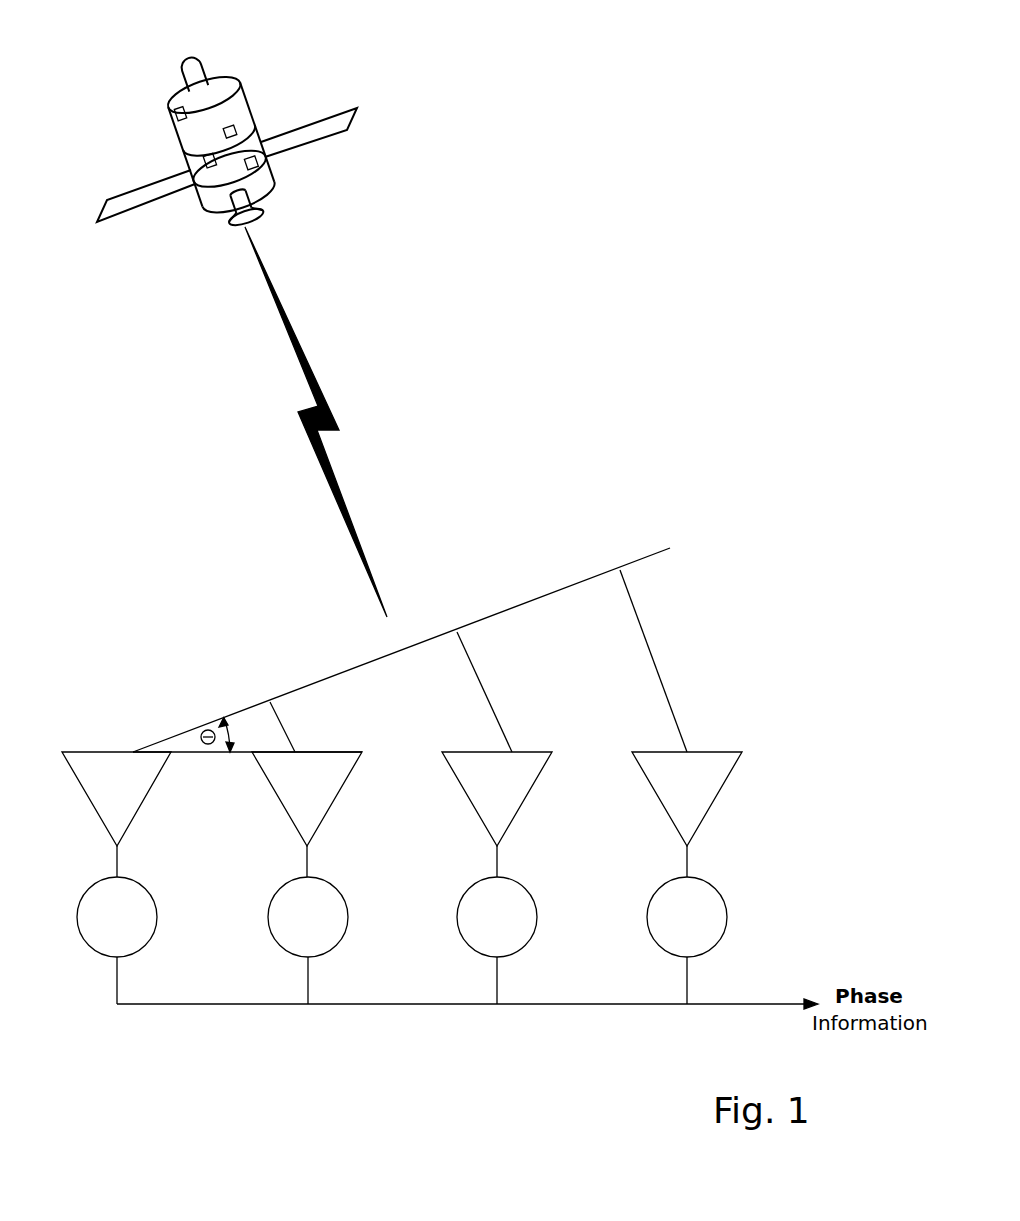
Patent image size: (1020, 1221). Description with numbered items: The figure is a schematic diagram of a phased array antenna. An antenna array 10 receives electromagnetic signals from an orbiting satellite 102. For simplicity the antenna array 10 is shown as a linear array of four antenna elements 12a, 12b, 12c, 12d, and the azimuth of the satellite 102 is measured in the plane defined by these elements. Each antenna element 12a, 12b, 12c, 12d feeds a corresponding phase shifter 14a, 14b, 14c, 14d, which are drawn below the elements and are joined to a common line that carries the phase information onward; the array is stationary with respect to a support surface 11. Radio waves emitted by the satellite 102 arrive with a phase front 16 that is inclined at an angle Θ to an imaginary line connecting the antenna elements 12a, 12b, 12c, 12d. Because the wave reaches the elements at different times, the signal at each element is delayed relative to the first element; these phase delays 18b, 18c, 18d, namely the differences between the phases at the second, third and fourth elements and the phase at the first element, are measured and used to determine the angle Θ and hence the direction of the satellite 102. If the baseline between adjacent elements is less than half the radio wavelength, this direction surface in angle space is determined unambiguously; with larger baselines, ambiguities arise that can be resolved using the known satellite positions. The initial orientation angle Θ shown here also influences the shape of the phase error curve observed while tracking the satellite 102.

The satellite 102 is at (358, 117).
The phase front 16 is at (552, 592).
The phase delay 18b is at (290, 733).
The phase delay 18c is at (485, 690).
The phase delay 18d is at (655, 658).
The antenna element 12a is at (147, 798).
The antenna element 12b is at (334, 803).
The antenna element 12c is at (520, 803).
The antenna element 12d is at (715, 802).
The phase shifter 14a is at (157, 918).
The phase shifter 14b is at (348, 917).
The phase shifter 14c is at (537, 917).
The phase shifter 14d is at (730, 917).
The support surface 11 is at (175, 1005).
The antenna array 10 is at (515, 1026).